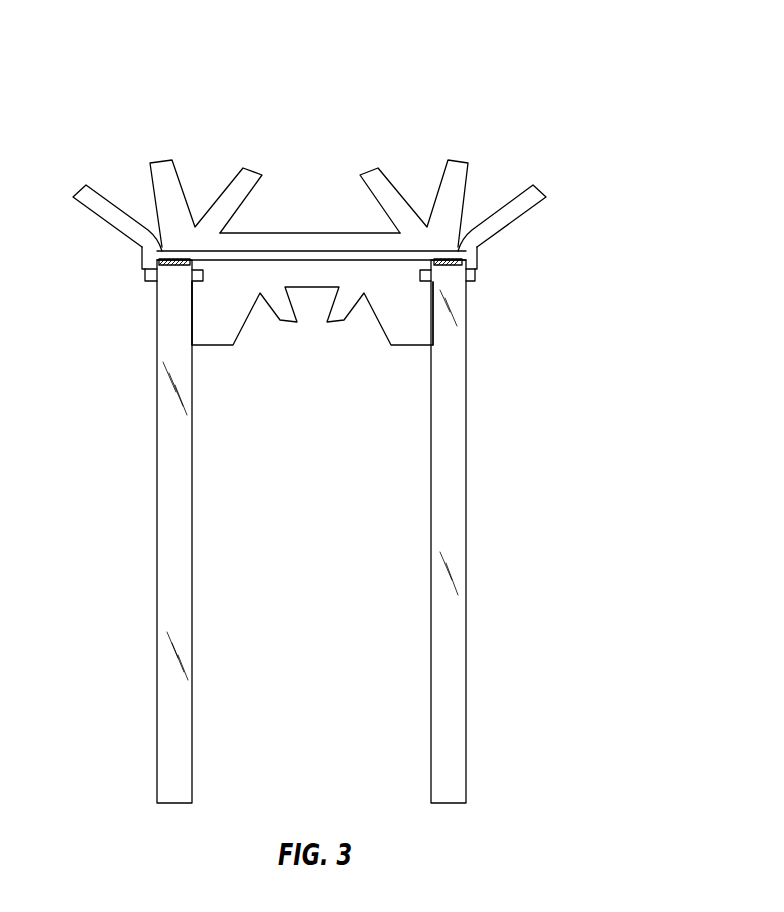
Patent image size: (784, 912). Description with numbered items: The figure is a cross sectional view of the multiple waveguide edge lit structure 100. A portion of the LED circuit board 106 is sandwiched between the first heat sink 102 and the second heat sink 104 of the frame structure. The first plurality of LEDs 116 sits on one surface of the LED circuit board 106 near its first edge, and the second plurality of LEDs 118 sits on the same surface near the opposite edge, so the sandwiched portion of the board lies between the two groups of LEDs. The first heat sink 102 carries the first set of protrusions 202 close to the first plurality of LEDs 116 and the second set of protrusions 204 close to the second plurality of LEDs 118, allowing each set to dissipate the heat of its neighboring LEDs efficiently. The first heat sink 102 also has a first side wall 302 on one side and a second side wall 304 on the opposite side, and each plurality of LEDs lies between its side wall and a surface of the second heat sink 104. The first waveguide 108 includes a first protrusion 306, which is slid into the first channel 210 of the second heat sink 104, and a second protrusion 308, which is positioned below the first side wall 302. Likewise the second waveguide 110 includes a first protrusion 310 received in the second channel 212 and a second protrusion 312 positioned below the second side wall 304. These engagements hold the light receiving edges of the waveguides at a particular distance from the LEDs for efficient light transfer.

The multiple waveguide edge lit structure 100 is at (656, 70).
The first heat sink 102 is at (269, 238).
The second heat sink 104 is at (343, 287).
The LED circuit board 106 is at (318, 251).
The first waveguide 108 is at (157, 571).
The second waveguide 110 is at (466, 571).
The first plurality of LEDs 116 is at (162, 241).
The second plurality of LEDs 118 is at (459, 243).
The first set of protrusions 202 is at (233, 180).
The second set of protrusions 204 is at (442, 180).
The first channel 210 is at (192, 285).
The second channel 212 is at (431, 285).
The first side wall 302 is at (143, 252).
The second side wall 304 is at (478, 250).
The first protrusion of the first waveguide 306 is at (189, 276).
The second protrusion of the first waveguide 308 is at (145, 277).
The first protrusion of the second waveguide 310 is at (432, 274).
The second protrusion of the second waveguide 312 is at (478, 277).